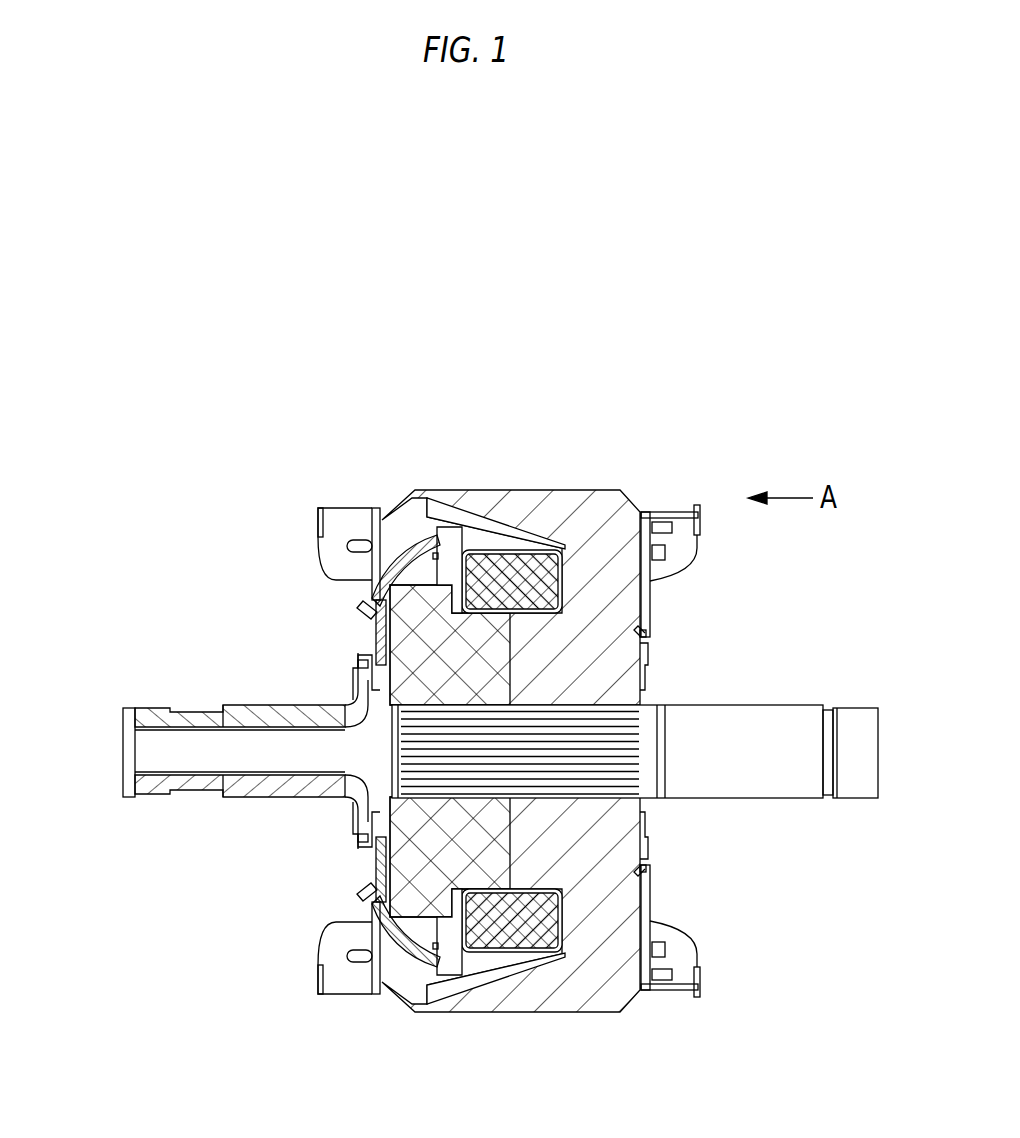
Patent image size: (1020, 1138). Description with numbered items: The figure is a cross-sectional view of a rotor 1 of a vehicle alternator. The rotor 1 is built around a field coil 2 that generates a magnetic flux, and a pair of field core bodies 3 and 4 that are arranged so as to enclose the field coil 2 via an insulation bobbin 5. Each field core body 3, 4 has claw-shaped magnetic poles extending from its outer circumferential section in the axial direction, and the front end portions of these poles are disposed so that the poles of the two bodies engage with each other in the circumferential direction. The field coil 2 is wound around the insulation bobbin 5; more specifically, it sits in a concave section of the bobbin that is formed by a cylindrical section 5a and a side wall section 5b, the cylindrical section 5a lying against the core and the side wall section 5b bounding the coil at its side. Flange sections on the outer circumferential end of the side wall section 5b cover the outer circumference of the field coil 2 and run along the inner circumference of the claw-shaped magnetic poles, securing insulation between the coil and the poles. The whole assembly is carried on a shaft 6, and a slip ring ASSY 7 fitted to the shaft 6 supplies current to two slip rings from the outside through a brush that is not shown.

The rotor 1 is at (503, 457).
The field coil 2 is at (525, 565).
The field core body 3 is at (587, 822).
The field core body 4 is at (425, 622).
The insulation bobbin 5 is at (428, 542).
The cylindrical section 5a is at (541, 613).
The side wall section 5b is at (568, 577).
The shaft 6 is at (747, 722).
The slip ring ASSY 7 is at (122, 725).